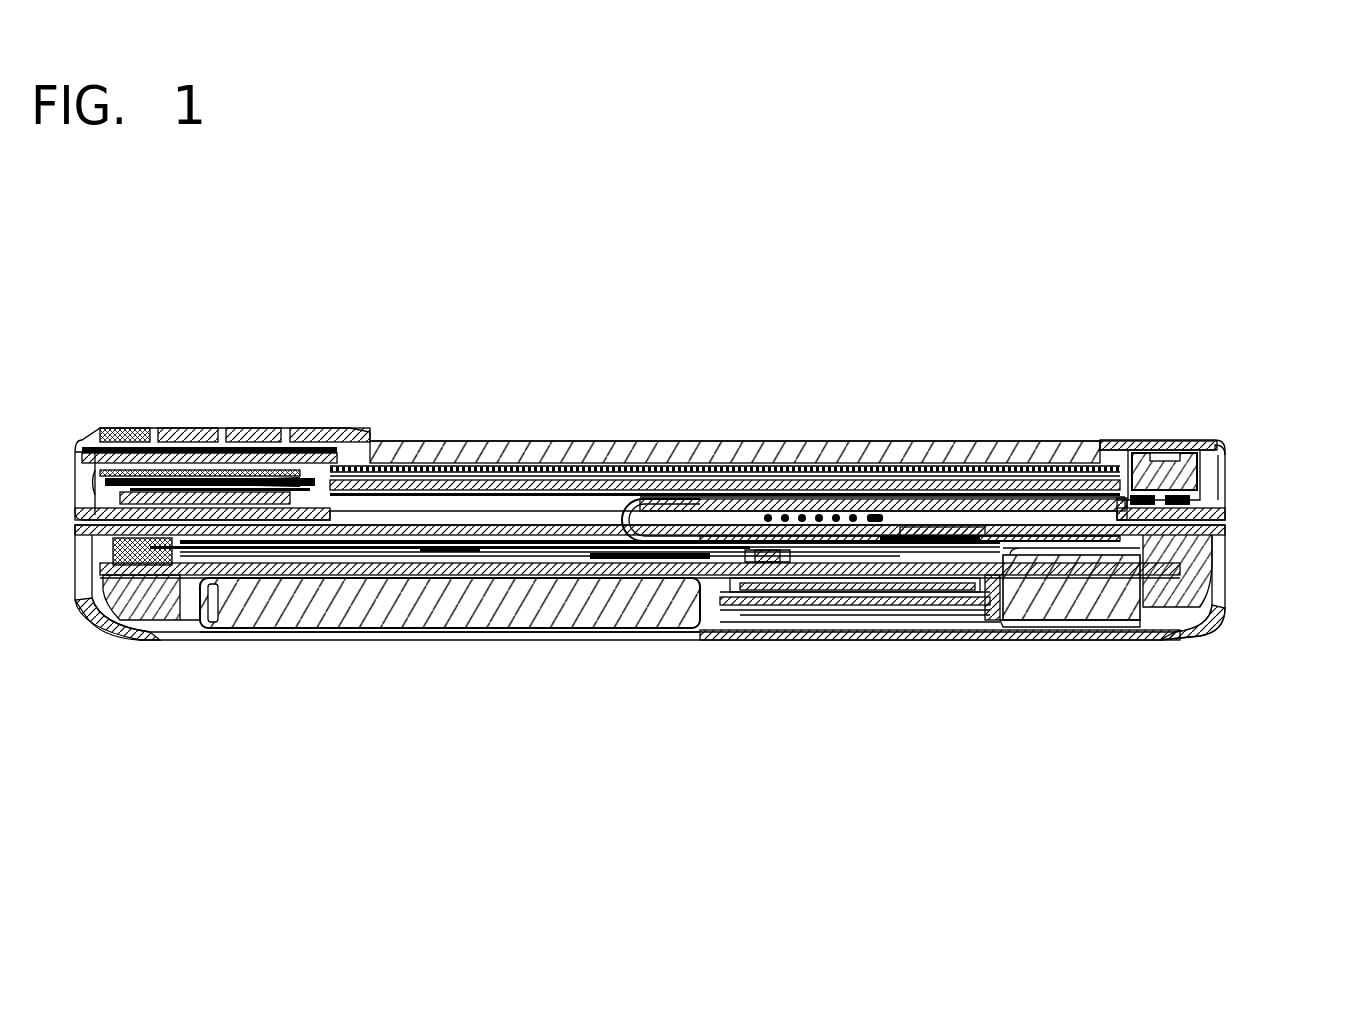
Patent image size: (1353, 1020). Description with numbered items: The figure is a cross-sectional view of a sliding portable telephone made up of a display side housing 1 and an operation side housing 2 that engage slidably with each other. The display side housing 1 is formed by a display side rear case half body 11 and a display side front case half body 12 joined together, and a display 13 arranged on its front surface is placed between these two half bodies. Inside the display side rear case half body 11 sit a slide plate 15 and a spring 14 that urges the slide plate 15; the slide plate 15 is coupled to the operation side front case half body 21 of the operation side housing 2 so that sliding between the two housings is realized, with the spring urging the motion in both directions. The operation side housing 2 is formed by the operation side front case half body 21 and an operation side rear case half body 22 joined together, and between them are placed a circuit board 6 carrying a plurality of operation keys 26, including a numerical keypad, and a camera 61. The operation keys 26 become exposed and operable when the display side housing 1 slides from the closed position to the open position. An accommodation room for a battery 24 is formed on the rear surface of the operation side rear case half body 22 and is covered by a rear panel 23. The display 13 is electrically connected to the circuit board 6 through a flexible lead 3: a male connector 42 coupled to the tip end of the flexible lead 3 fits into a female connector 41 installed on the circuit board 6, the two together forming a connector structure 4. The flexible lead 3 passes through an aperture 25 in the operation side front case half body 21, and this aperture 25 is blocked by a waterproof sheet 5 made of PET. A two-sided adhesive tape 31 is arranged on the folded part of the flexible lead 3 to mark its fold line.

The display side housing 1 is at (1328, 440).
The operation side housing 2 is at (1328, 532).
The flexible lead 3 is at (612, 520).
The connector structure 4 is at (800, 733).
The waterproof sheet 5 is at (650, 548).
The circuit board 6 is at (523, 567).
The display side rear case half body 11 is at (1222, 510).
The display side front case half body 12 is at (1222, 452).
The display 13 is at (1027, 450).
The spring 14 is at (806, 476).
The slide plate 15 is at (933, 525).
The operation side front case half body 21 is at (1228, 535).
The operation side rear case half body 22 is at (1228, 598).
The rear panel 23 is at (252, 640).
The battery 24 is at (397, 620).
The aperture 25 is at (873, 535).
The operation keys 26 is at (423, 527).
The two-sided adhesive tape 31 is at (970, 560).
The female connector 41 is at (742, 575).
The male connector 42 is at (778, 575).
The camera 61 is at (1075, 600).